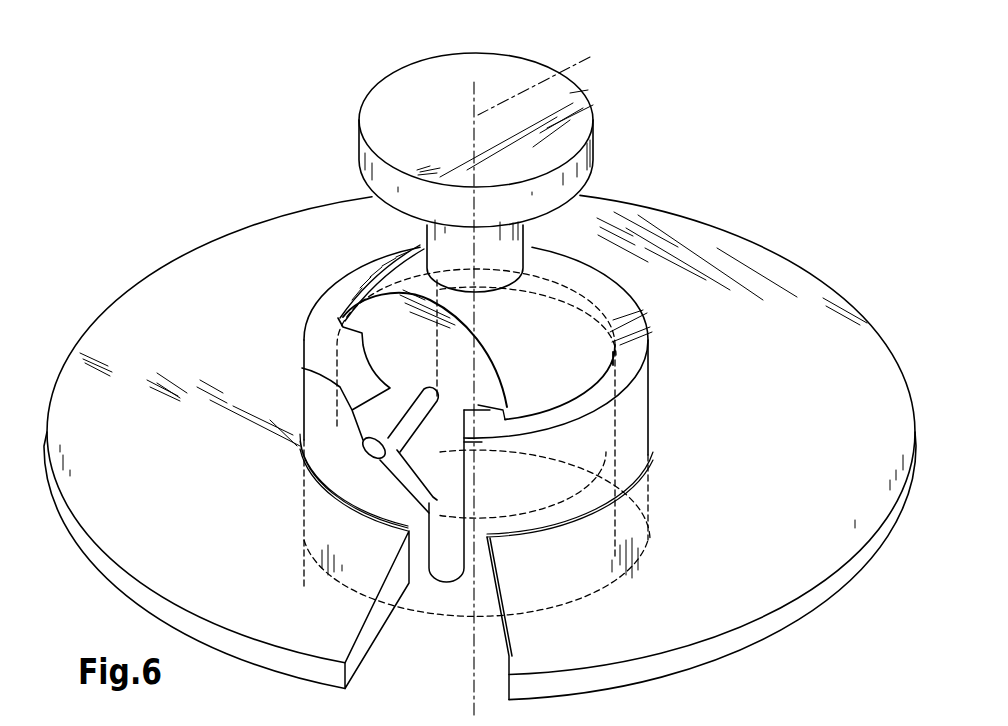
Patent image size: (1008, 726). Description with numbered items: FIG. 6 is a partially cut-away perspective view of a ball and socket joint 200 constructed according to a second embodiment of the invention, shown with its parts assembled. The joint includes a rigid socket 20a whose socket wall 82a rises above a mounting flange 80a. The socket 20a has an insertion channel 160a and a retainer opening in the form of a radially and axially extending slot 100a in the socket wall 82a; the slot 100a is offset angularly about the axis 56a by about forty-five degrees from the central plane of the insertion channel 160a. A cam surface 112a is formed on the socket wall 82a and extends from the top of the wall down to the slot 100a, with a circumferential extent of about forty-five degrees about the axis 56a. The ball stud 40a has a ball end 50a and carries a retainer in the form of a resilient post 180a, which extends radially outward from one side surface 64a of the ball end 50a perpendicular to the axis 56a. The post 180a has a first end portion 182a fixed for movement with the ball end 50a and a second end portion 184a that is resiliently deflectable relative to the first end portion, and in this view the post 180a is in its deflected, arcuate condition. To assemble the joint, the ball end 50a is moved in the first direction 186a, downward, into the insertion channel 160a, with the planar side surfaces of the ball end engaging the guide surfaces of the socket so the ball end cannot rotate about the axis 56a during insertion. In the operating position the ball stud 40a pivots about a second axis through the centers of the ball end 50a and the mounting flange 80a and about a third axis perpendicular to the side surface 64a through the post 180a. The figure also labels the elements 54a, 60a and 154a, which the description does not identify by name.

The ball and socket joint 200 is at (223, 158).
The socket 20a is at (130, 268).
The ball stud 40a is at (612, 164).
The knob head 54a is at (376, 89).
The axis 56a is at (553, 77).
The bore 60a is at (540, 270).
The side surface 64a is at (387, 315).
The mounting flange 80a is at (140, 595).
The socket wall 82a is at (631, 433).
The slot 100a is at (449, 562).
The cam surface 112a is at (352, 408).
The stop surface 154a is at (503, 410).
The insertion channel 160a is at (598, 399).
The resilient post 180a is at (348, 452).
The first end portion 182a is at (419, 405).
The second end portion 184a is at (362, 456).
The first direction 186a is at (782, 128).
The ball end 50a is at (612, 318).